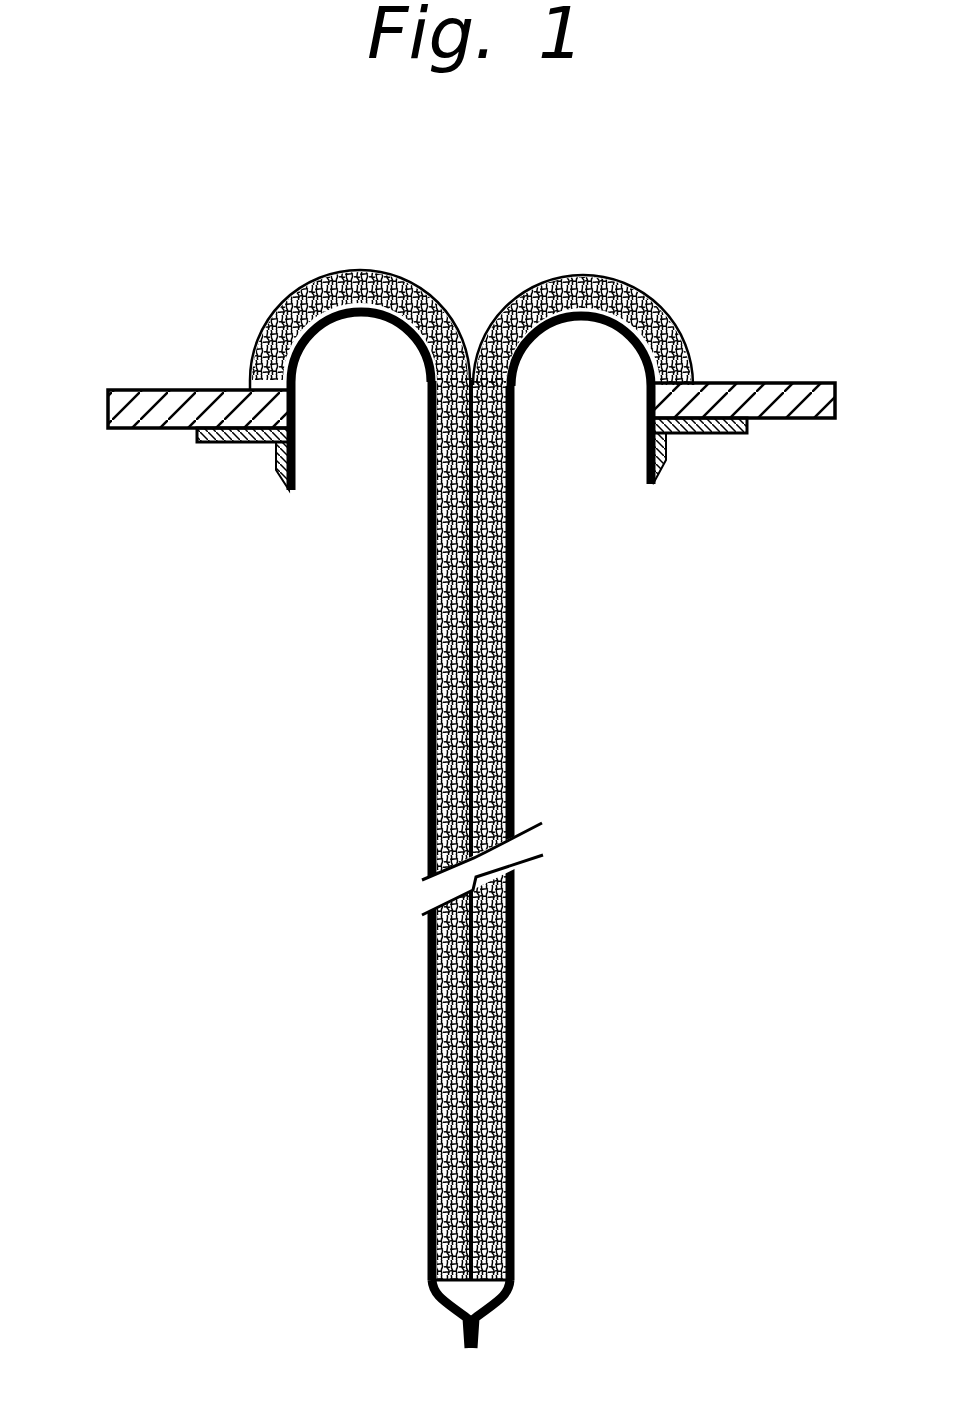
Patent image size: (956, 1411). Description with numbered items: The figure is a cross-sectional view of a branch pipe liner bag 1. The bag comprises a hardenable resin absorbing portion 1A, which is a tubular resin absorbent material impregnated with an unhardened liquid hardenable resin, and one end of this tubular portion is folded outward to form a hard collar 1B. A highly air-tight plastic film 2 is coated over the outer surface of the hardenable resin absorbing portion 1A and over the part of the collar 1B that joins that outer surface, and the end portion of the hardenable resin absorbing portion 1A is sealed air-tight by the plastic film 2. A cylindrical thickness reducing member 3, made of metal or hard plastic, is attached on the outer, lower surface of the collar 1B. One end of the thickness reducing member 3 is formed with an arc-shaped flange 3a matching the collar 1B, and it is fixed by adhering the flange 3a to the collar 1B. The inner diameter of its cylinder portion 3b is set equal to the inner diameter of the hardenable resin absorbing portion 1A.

The branch pipe liner bag 1 is at (471, 761).
The hardenable resin absorbing portion 1A is at (512, 682).
The collar 1B is at (763, 386).
The plastic film 2 is at (430, 793).
The thickness reducing member 3 is at (476, 483).
The flange 3a is at (707, 436).
The cylinder portion 3b is at (650, 465).